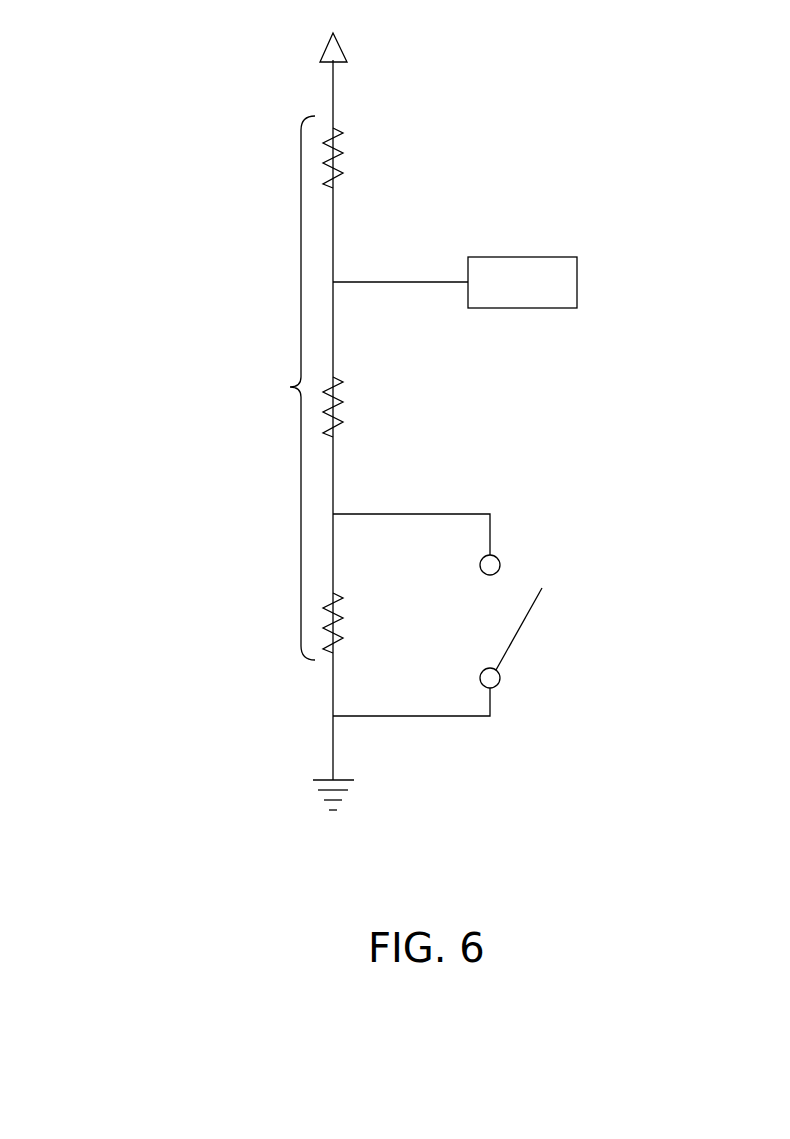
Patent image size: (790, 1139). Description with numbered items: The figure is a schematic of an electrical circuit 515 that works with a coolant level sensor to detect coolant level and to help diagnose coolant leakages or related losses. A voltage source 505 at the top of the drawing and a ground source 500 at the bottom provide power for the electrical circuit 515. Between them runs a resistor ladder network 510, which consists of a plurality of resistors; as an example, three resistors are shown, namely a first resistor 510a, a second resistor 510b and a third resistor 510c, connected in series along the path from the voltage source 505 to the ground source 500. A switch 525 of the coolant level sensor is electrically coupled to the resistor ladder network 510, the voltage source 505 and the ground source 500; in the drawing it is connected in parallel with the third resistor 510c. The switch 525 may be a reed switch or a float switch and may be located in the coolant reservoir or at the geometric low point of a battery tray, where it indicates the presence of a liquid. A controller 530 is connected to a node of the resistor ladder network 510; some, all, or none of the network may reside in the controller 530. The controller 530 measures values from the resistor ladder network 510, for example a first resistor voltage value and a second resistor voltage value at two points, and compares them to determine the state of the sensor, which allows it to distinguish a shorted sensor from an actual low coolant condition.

The ground source 500 is at (360, 802).
The voltage source 505 is at (341, 46).
The resistor ladder network 510 is at (276, 388).
The first resistor 510a is at (402, 134).
The second resistor 510b is at (402, 380).
The third resistor 510c is at (400, 594).
The electrical circuit 515 is at (197, 420).
The switch 525 is at (469, 620).
The controller 530 is at (577, 272).